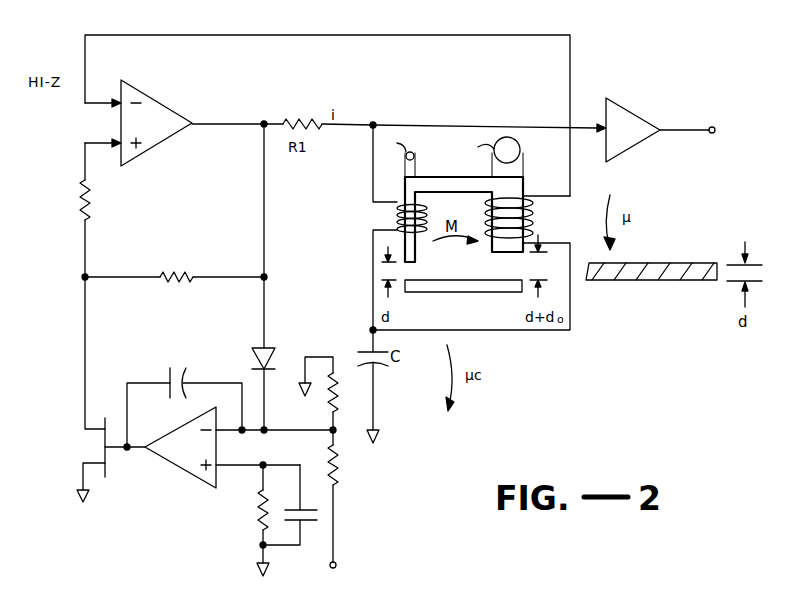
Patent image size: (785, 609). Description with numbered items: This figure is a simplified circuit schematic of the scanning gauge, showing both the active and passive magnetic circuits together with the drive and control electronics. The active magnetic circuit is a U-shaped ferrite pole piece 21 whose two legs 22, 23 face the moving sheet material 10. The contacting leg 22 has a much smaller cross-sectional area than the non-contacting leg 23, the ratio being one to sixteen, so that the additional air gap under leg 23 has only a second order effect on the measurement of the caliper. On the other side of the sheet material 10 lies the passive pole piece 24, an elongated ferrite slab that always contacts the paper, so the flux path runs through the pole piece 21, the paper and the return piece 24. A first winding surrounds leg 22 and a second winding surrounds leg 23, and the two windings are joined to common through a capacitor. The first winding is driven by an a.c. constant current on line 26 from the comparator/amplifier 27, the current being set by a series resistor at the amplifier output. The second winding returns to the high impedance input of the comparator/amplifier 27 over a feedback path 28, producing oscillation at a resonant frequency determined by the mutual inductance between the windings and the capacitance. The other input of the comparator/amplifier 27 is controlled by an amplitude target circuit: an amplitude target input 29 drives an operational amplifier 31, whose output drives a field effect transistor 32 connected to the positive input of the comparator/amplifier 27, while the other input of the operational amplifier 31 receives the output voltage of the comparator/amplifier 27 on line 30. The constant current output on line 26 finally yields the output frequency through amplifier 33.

The sheet material 10 is at (667, 263).
The U-shaped magnetic pole piece 21 is at (450, 199).
The leg 22 is at (407, 196).
The leg 23 is at (518, 191).
The passive pole piece 24 is at (457, 289).
The line 26 is at (358, 123).
The comparator/amplifier 27 is at (160, 97).
The feedback path 28 is at (130, 35).
The amplitude target input 29 is at (328, 568).
The line 30 is at (265, 227).
The operational amplifier 31 is at (176, 430).
The field effect transistor 32 is at (107, 455).
The amplifier 33 is at (630, 106).